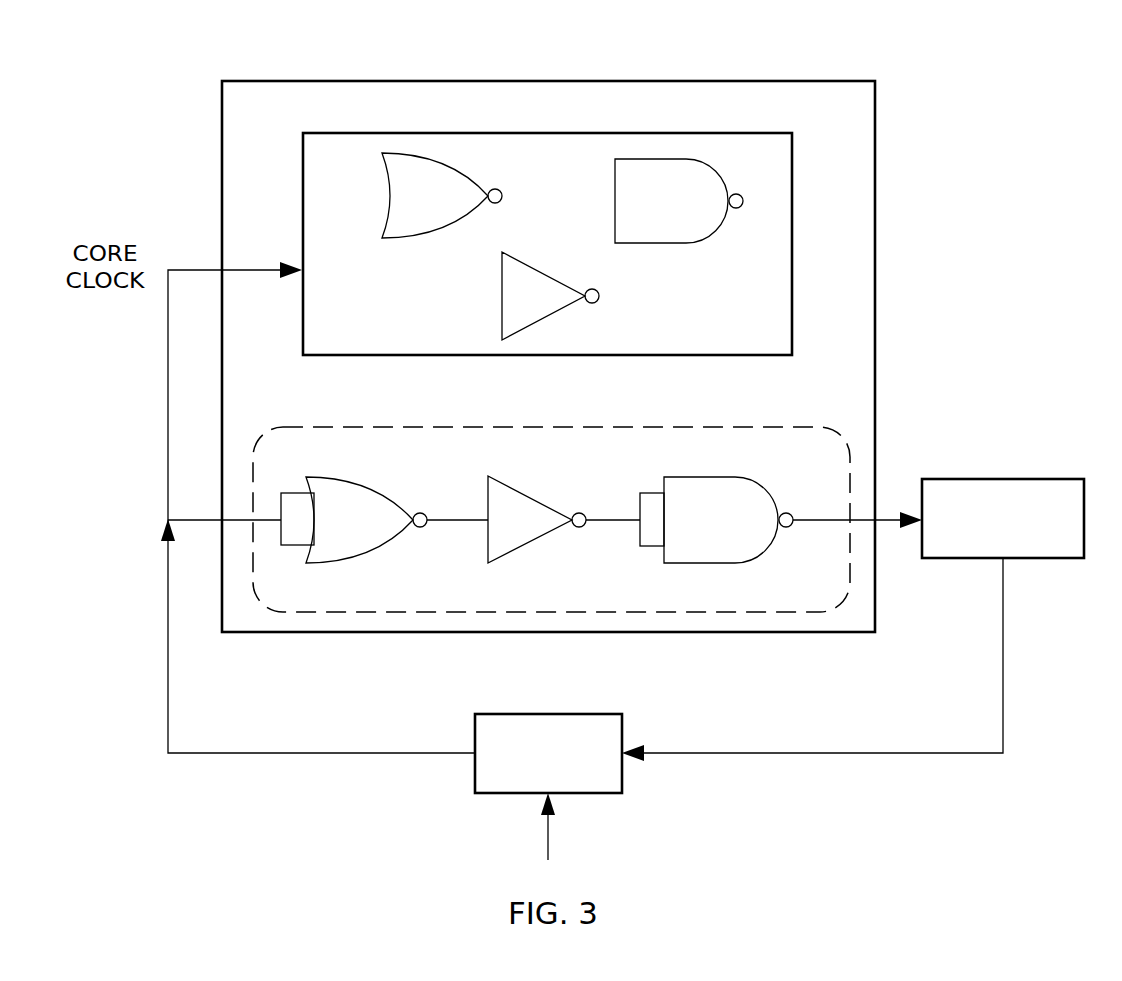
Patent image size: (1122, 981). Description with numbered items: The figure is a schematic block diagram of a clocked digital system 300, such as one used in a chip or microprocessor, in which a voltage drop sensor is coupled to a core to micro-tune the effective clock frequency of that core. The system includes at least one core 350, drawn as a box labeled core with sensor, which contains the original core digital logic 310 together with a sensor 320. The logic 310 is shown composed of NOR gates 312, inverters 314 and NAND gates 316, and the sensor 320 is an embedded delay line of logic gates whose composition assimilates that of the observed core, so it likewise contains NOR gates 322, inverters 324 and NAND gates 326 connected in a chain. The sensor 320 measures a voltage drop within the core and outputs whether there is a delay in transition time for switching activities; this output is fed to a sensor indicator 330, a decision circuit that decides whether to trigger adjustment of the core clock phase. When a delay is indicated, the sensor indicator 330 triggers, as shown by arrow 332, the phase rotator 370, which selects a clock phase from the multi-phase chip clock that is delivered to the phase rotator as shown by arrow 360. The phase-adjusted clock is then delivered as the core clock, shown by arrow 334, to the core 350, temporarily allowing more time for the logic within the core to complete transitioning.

The clocked digital system 300 is at (952, 76).
The digital logic 310 is at (657, 133).
The NOR gate 312 is at (425, 238).
The inverter 314 is at (543, 318).
The NAND gate 316 is at (672, 243).
The sensor 320 is at (493, 427).
The NOR gate 322 is at (383, 549).
The inverter 324 is at (535, 540).
The NAND gate 326 is at (750, 560).
The sensor indicator 330 is at (968, 479).
The arrow indicating trigger of clock phase adjustment 332 is at (893, 753).
The arrow indicating core clock delivery 334 is at (338, 753).
The core 350 is at (607, 81).
The arrow indicating chip clock delivery 360 is at (548, 833).
The phase rotator 370 is at (564, 714).